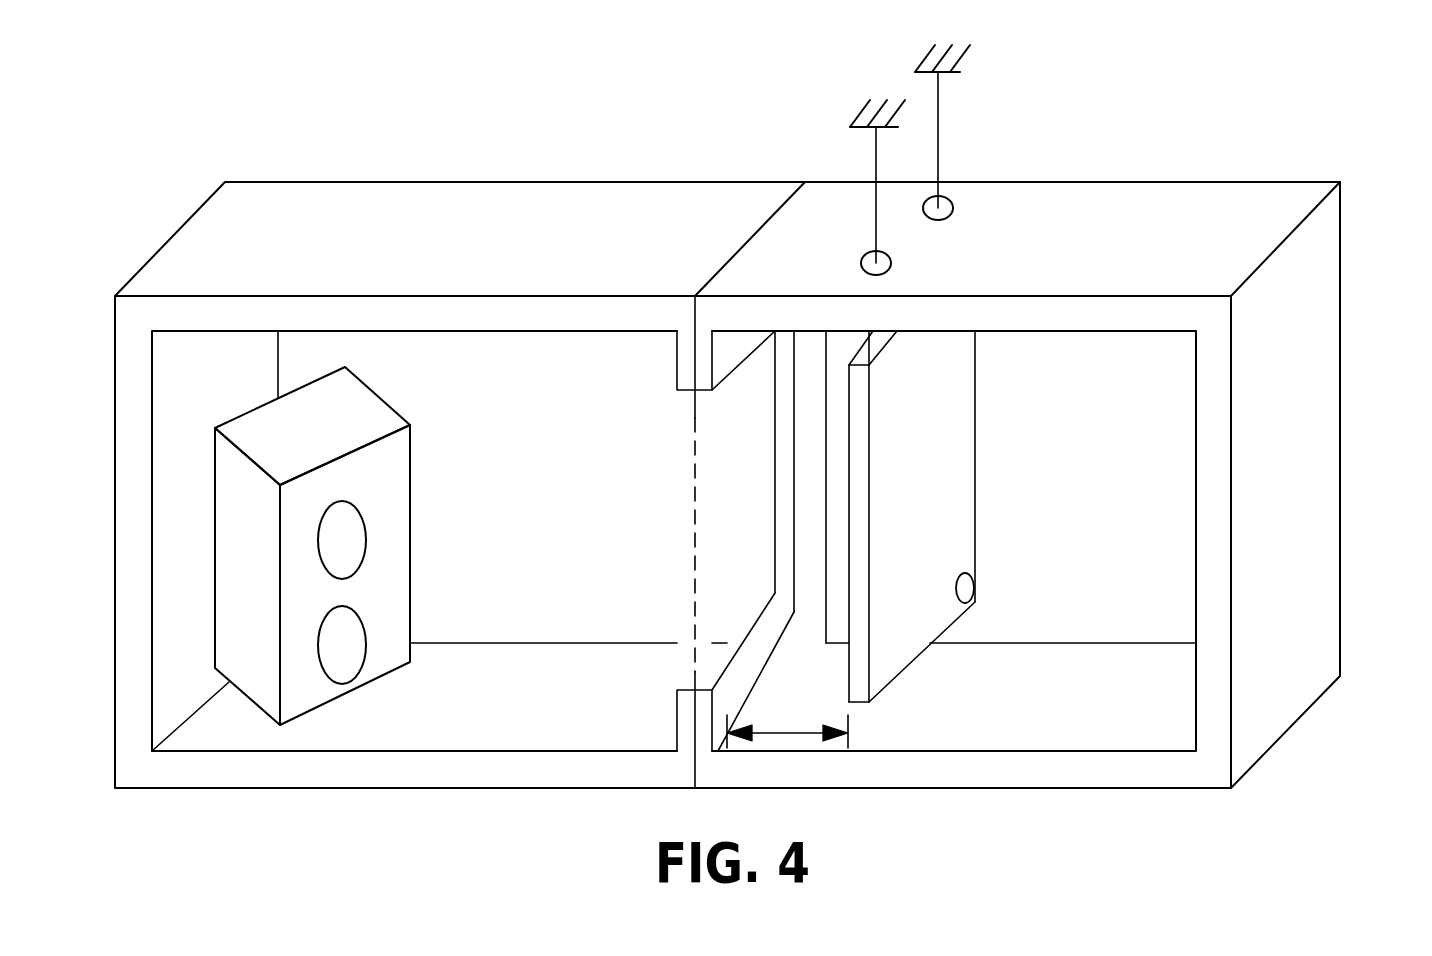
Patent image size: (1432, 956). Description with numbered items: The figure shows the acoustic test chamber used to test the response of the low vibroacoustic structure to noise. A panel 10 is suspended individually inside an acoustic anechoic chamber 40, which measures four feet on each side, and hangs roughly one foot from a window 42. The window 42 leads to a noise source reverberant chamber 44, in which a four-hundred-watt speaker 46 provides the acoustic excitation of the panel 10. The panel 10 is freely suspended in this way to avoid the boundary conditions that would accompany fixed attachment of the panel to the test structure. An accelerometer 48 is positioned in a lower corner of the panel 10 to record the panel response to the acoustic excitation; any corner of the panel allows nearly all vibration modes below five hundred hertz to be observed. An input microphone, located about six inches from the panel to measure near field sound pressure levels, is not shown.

The panel 10 is at (932, 395).
The acoustic anechoic chamber 40 is at (1182, 484).
The window 42 is at (710, 542).
The noise source reverberant chamber 44 is at (480, 343).
The speaker 46 is at (410, 487).
The accelerometer 48 is at (970, 600).